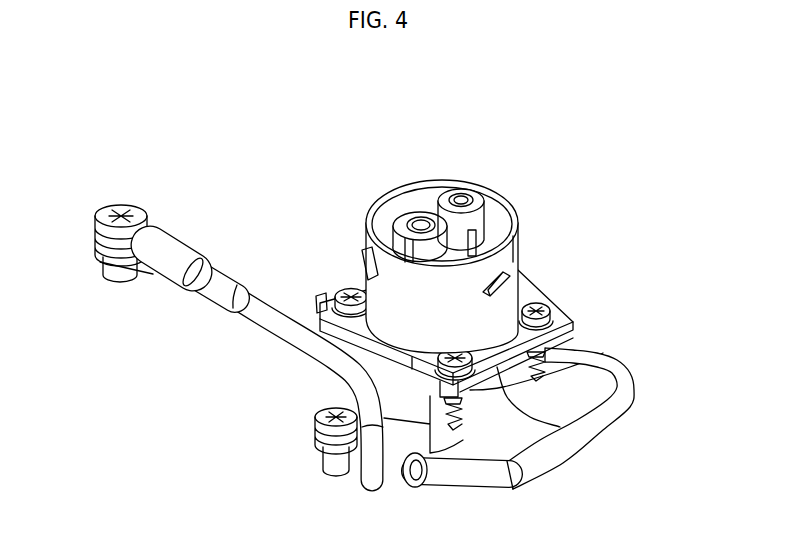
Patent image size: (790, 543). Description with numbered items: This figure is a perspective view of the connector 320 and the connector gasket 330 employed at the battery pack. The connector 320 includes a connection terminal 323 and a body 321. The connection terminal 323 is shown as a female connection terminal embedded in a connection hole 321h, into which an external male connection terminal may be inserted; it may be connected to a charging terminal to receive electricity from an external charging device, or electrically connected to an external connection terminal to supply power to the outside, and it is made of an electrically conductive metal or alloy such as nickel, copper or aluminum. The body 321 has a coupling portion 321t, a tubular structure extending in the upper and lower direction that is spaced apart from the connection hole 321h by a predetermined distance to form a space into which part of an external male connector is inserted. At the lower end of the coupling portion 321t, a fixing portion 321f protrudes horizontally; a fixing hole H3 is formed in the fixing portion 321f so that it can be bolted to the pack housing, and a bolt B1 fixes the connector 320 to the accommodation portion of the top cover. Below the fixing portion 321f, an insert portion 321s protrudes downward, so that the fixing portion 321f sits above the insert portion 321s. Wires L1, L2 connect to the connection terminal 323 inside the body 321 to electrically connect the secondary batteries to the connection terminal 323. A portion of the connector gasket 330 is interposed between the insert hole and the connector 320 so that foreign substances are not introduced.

The connector 320 is at (371, 305).
The body 321 is at (371, 336).
The coupling portion 321t is at (458, 243).
The connection hole 321h is at (418, 198).
The connection terminal 323 is at (457, 197).
The fixing portion 321f is at (478, 339).
The insert portion 321s is at (587, 437).
The connector gasket 330 is at (532, 418).
The bolt B1 is at (542, 316).
The fixing hole H3 is at (571, 343).
The wire L1 is at (223, 278).
The wire L2 is at (467, 486).